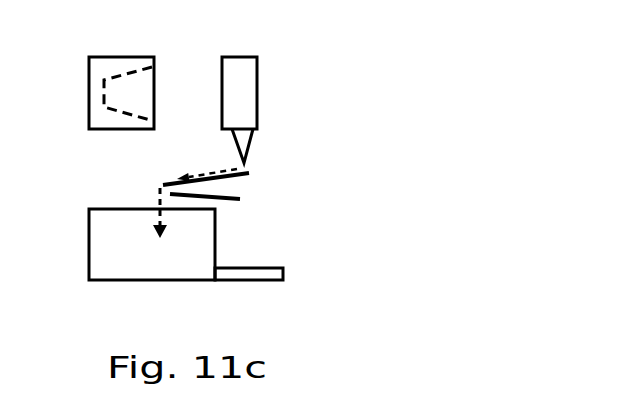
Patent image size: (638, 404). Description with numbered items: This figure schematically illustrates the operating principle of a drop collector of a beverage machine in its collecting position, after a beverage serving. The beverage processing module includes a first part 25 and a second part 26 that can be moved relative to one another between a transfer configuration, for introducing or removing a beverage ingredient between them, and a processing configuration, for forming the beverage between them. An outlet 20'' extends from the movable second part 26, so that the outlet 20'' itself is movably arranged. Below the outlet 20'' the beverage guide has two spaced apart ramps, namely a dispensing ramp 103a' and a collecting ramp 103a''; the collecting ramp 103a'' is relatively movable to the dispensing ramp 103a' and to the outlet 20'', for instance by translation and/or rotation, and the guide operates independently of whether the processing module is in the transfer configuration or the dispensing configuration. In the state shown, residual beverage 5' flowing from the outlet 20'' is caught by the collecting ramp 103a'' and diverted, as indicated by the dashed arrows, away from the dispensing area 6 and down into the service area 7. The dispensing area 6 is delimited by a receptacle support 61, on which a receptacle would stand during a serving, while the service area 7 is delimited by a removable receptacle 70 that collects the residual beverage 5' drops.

The first part 25 is at (112, 66).
The second part 26 is at (242, 92).
The outlet 20'' is at (279, 126).
The collecting ramp 103a'' is at (271, 187).
The dispensing ramp 103a' is at (255, 217).
The residual beverage 5' is at (161, 184).
The removable receptacle 70 is at (185, 272).
The receptacle support 61 is at (238, 278).
The service area 7 is at (129, 257).
The dispensing area 6 is at (244, 250).